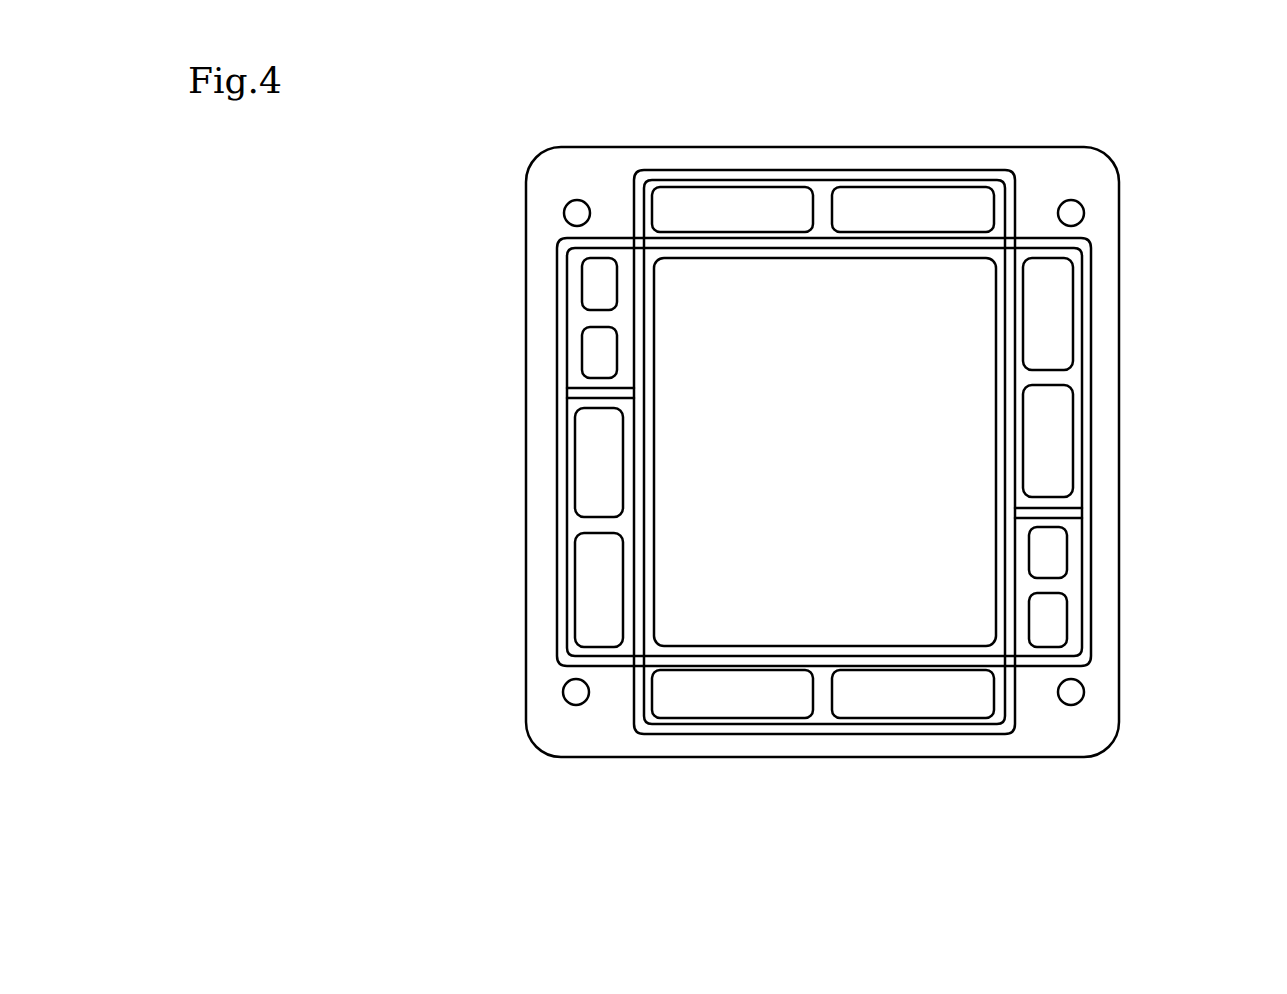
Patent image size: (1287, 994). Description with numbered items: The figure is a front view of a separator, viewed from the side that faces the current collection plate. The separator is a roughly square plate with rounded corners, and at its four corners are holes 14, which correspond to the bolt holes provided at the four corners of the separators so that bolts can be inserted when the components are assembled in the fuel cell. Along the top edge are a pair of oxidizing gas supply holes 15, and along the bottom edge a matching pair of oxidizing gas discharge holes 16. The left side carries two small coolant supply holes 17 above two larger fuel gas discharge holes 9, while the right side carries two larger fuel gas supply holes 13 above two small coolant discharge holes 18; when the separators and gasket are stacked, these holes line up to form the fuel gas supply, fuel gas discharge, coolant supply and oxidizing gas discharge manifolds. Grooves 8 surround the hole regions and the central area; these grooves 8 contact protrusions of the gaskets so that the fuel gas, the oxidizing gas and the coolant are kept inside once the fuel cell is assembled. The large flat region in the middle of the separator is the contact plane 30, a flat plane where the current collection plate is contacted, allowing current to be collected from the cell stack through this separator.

The grooves 8 is at (1087, 639).
The fuel gas discharge holes 9 is at (598, 552).
The fuel gas supply holes 13 is at (1053, 418).
The positioning holes 14 is at (570, 213).
The oxidizing gas supply holes 15 is at (768, 200).
The oxidizing gas discharge holes 16 is at (853, 702).
The coolant supply holes 17 is at (600, 342).
The coolant discharge holes 18 is at (1050, 616).
The contact plane 30 is at (935, 315).